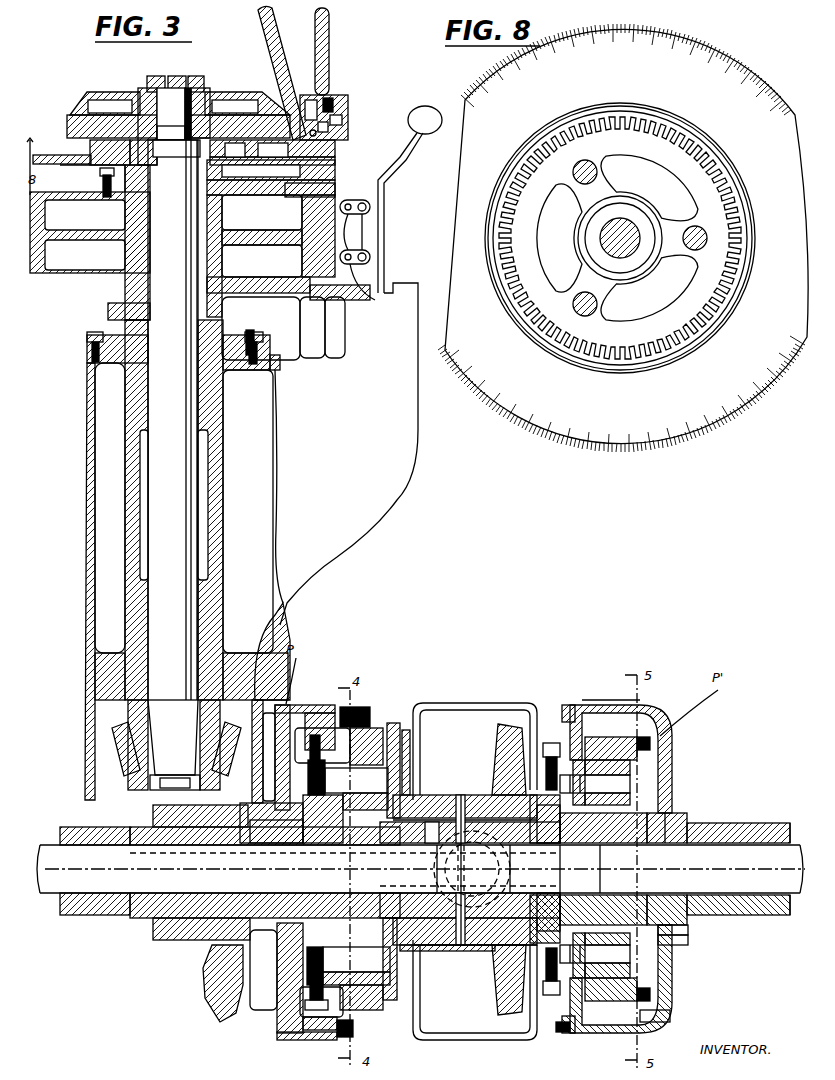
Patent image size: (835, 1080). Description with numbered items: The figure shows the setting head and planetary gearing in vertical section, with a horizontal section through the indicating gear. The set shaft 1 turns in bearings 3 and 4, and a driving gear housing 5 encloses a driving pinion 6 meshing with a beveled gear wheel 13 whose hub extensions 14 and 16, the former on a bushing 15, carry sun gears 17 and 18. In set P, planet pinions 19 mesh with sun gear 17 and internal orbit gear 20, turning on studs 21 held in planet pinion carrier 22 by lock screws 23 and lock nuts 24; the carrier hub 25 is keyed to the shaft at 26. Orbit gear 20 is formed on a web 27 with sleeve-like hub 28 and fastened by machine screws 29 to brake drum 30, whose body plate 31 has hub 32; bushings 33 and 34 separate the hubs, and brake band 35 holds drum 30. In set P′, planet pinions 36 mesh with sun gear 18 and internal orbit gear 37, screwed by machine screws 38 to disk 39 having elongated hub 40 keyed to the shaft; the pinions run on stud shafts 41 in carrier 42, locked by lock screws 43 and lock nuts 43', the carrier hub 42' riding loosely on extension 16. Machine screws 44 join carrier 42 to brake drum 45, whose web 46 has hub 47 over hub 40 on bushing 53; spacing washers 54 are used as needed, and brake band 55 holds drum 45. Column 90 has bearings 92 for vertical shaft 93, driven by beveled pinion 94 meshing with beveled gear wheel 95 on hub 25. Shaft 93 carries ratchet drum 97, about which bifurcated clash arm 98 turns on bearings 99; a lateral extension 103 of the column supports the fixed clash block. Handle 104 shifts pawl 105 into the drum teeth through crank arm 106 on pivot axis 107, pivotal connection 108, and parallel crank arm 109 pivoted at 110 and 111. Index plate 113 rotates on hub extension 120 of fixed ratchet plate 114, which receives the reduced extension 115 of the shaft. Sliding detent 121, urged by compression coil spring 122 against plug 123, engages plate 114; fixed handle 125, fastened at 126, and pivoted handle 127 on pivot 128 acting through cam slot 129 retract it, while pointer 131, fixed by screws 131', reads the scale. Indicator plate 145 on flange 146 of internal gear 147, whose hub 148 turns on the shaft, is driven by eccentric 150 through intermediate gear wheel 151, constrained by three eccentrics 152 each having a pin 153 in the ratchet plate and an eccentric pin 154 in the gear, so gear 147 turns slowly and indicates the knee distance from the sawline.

In FIG. 3, the set shaft 1 is at (80, 905).
In FIG. 3, the bearing 3 is at (66, 827).
In FIG. 3, the bearing 4 is at (782, 830).
In FIG. 3, the driving gear housing 5 is at (509, 702).
In FIG. 3, the driving pinion 6 is at (440, 857).
In FIG. 3, the beveled gear wheel 13 is at (495, 992).
In FIG. 3, the hub extension 14 is at (509, 881).
In FIG. 3, the bushing 15 is at (447, 947).
In FIG. 3, the hub extension 16 is at (577, 869).
In FIG. 3, the sun gear 17 is at (475, 965).
In FIG. 3, the sun gear 18 is at (611, 869).
In FIG. 3, the planet pinions 19 is at (392, 716).
In FIG. 3, the internal orbit gear 20 is at (382, 712).
In FIG. 3, the studs 21 is at (348, 869).
In FIG. 3, the planet pinion carrier 22 is at (296, 958).
In FIG. 3, the lock screws 23 is at (316, 1010).
In FIG. 3, the lock nuts 24 is at (306, 992).
In FIG. 3, the hub 25 is at (192, 932).
In FIG. 3, the key 26 is at (172, 850).
In FIG. 3, the web 27 is at (414, 770).
In FIG. 3, the sleeve-like hub 28 is at (452, 808).
In FIG. 3, the machine screws 29 is at (362, 706).
In FIG. 3, the brake drum 30 is at (318, 706).
In FIG. 3, the body plate 31 is at (270, 757).
In FIG. 3, the hub 32 is at (264, 890).
In FIG. 3, the bushing 33 is at (470, 795).
In FIG. 3, the bushing 34 is at (275, 894).
In FIG. 3, the brake band 35 is at (320, 705).
In FIG. 3, the planet pinions 36 is at (652, 748).
In FIG. 3, the internal orbit gear 37 is at (597, 735).
In FIG. 3, the machine screws 38 is at (660, 728).
In FIG. 3, the disk 39 is at (652, 792).
In FIG. 3, the elongated hub 40 is at (676, 826).
In FIG. 3, the stud shafts 41 is at (595, 869).
In FIG. 3, the planet pinion carrier 42 is at (568, 854).
In FIG. 3, the hub 42' is at (483, 886).
In FIG. 3, the lock screws 43 is at (548, 854).
In FIG. 3, the lock nuts 43' is at (554, 840).
In FIG. 3, the machine screws 44 is at (565, 1036).
In FIG. 3, the brake drum 45 is at (672, 1006).
In FIG. 3, the body plate 46 is at (676, 948).
In FIG. 3, the hub 47 is at (676, 928).
In FIG. 3, the bushing 53 is at (712, 916).
In FIG. 3, the spacing washers 54 is at (672, 822).
In FIG. 3, the brake band 55 is at (628, 702).
In FIG. 3, the column 90 is at (86, 600).
In FIG. 3, the bearings 92 is at (222, 615).
In FIG. 3, the vertical shaft 93 is at (174, 465).
In FIG. 3, the beveled pinion 94 is at (140, 762).
In FIG. 3, the beveled gear wheel 95 is at (218, 1000).
In FIG. 3, the ratchet drum 97 is at (92, 268).
In FIG. 3, the clash arm 98 is at (335, 188).
In FIG. 3, the bearings 99 is at (242, 300).
In FIG. 3, the lateral extension 103 is at (416, 292).
In FIG. 3, the handle 104 is at (402, 152).
In FIG. 3, the shiftable pawl 105 is at (310, 246).
In FIG. 3, the crank arm 106 is at (368, 212).
In FIG. 3, the pivot axis 107 is at (370, 205).
In FIG. 3, the pivotal connection 108 is at (370, 250).
In FIG. 3, the parallel crank arm 109 is at (368, 256).
In FIG. 3, the pivot 110 is at (370, 262).
In FIG. 3, the pivot 111 is at (368, 290).
In FIG. 3, the index plate 113 is at (110, 98).
In FIG. 3, the fixed ratchet plate 114 is at (70, 130).
In FIG. 3, the reduced extension 115 is at (174, 126).
In FIG. 8, the reduced extension 115 is at (626, 228).
In FIG. 3, the hub extension 120 is at (138, 95).
In FIG. 3, the sliding detent 121 is at (338, 125).
In FIG. 3, the compression coil spring 122 is at (342, 118).
In FIG. 3, the plug 123 is at (346, 135).
In FIG. 3, the fixed handle 125 is at (330, 46).
In FIG. 3, the fastening 126 is at (336, 105).
In FIG. 3, the pivoted handle 127 is at (268, 26).
In FIG. 3, the pivot 128 is at (271, 238).
In FIG. 3, the cam slot 129 is at (262, 224).
In FIG. 3, the pointer 131 is at (223, 71).
In FIG. 3, the screws 131' is at (186, 65).
In FIG. 3, the indicator plate 145 is at (70, 160).
In FIG. 8, the indicator plate 145 is at (545, 425).
In FIG. 3, the flange 146 is at (66, 170).
In FIG. 3, the internal gear 147 is at (82, 166).
In FIG. 8, the internal gear 147 is at (522, 286).
In FIG. 3, the hub 148 is at (150, 188).
In FIG. 3, the driving eccentric 150 is at (187, 172).
In FIG. 8, the driving eccentric 150 is at (650, 235).
In FIG. 3, the intermediate gear wheel 151 is at (148, 162).
In FIG. 8, the intermediate gear wheel 151 is at (530, 248).
In FIG. 3, the eccentrics 152 is at (240, 112).
In FIG. 8, the eccentrics 152 is at (597, 172).
In FIG. 3, the pin 153 is at (171, 133).
In FIG. 3, the eccentric pin 154 is at (200, 146).